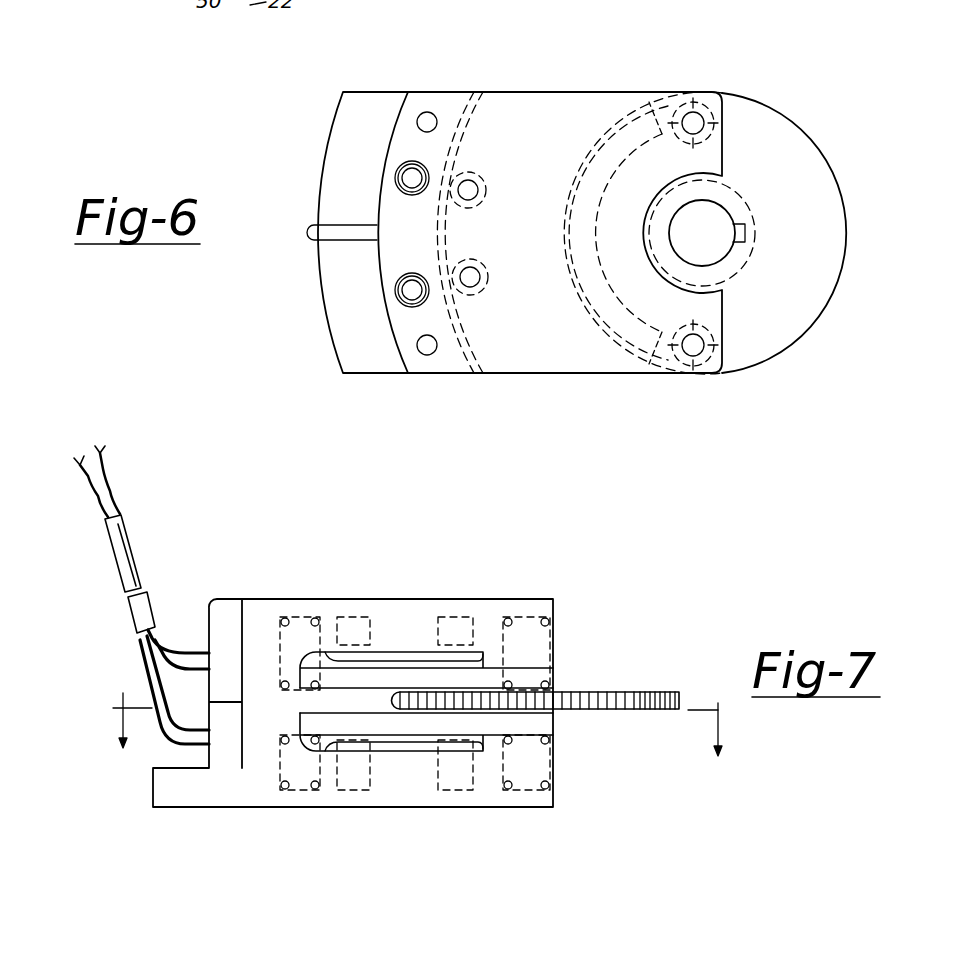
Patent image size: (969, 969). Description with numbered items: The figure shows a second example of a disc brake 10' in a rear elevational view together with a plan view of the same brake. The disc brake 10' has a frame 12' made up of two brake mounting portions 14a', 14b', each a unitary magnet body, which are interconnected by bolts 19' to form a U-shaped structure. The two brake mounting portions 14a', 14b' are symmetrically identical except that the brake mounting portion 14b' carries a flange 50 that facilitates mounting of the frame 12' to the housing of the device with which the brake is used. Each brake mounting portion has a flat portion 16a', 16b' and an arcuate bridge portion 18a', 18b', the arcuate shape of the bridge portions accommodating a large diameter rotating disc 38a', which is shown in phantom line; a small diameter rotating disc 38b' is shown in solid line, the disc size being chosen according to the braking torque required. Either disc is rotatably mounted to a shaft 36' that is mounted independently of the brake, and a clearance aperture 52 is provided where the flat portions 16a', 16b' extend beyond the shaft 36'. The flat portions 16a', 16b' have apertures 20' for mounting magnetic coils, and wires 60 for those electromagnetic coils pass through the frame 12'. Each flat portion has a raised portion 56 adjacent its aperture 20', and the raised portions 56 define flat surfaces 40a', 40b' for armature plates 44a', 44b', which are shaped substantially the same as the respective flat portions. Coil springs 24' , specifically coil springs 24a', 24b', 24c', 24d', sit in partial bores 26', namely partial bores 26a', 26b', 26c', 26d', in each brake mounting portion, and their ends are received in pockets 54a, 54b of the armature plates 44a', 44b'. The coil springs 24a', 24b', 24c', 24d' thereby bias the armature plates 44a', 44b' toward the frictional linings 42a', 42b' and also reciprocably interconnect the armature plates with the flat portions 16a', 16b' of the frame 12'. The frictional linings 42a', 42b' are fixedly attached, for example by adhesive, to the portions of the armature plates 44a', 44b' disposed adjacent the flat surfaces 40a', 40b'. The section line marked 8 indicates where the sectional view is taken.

In FIG. 6, the disc brake 10' is at (762, 37).
In FIG. 7, the disc brake 10' is at (680, 552).
In FIG. 6, the frame 12' is at (538, 264).
In FIG. 7, the frame 12' is at (532, 541).
In FIG. 6, the brake mounting portion 14a' is at (520, 232).
In FIG. 7, the brake mounting portion 14a' is at (426, 654).
In FIG. 7, the brake mounting portion 14b' is at (426, 745).
In FIG. 6, the flat portion 16a' is at (545, 391).
In FIG. 7, the flat portion 16a' is at (433, 600).
In FIG. 7, the flat portion 16b' is at (398, 842).
In FIG. 7, the bridge portion 18a' is at (174, 658).
In FIG. 7, the bridge portion 18b' is at (194, 696).
In FIG. 6, the bolts 19' is at (389, 230).
In FIG. 7, the apertures 20' is at (415, 730).
In FIG. 7, the coil springs 24' is at (457, 576).
In FIG. 6, the coil spring 24a' is at (508, 277).
In FIG. 7, the coil spring 24a' is at (310, 809).
In FIG. 6, the coil spring 24b' is at (701, 383).
In FIG. 7, the coil spring 24b' is at (493, 811).
In FIG. 6, the coil spring 24c' is at (504, 189).
In FIG. 6, the coil spring 24d' is at (752, 97).
In FIG. 7, the partial bores 26' is at (455, 577).
In FIG. 6, the partial bore 26a' is at (508, 239).
In FIG. 7, the partial bore 26a' is at (241, 828).
In FIG. 6, the partial bore 26b' is at (770, 379).
In FIG. 7, the partial bore 26b' is at (593, 806).
In FIG. 6, the partial bore 26c' is at (519, 146).
In FIG. 6, the partial bore 26d' is at (705, 58).
In FIG. 6, the shaft 36' is at (727, 225).
In FIG. 6, the large diameter rotating disc 38a' is at (524, 85).
In FIG. 6, the small diameter rotating disc 38b' is at (706, 231).
In FIG. 7, the small diameter rotating disc 38b' is at (668, 671).
In FIG. 7, the flat surface 40a' is at (465, 610).
In FIG. 7, the flat surface 40b' is at (426, 709).
In FIG. 6, the frictional lining 42a' is at (631, 233).
In FIG. 7, the frictional lining 42a' is at (467, 632).
In FIG. 7, the frictional lining 42b' is at (494, 777).
In FIG. 6, the armature plate 44a' is at (574, 189).
In FIG. 7, the armature plate 44a' is at (536, 676).
In FIG. 7, the armature plate 44b' is at (604, 732).
In FIG. 6, the flange 50 is at (362, 295).
In FIG. 7, the flange 50 is at (165, 793).
In FIG. 6, the clearance aperture 52 is at (705, 291).
In FIG. 7, the pocket 54a is at (285, 640).
In FIG. 7, the pocket 54b is at (548, 630).
In FIG. 7, the raised portion 56 is at (374, 657).
In FIG. 6, the wires 60 is at (316, 236).
In FIG. 7, the wires 60 is at (142, 640).
In FIG. 7, the section line 8 is at (423, 749).